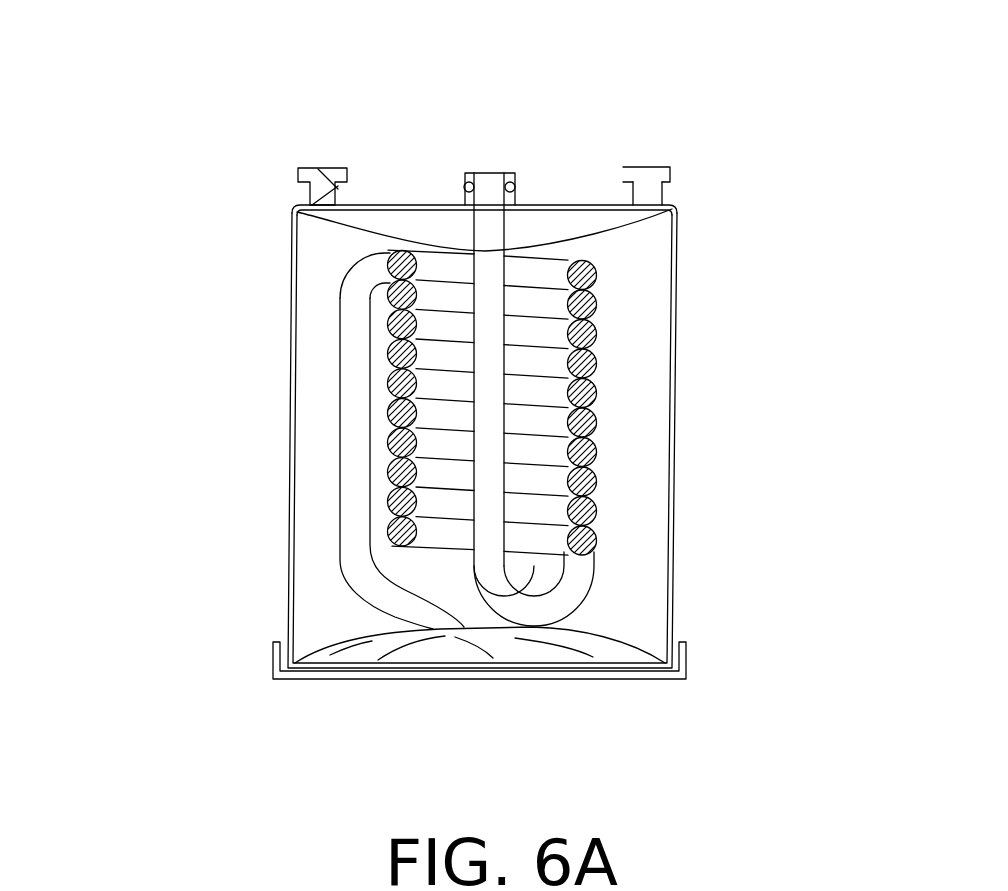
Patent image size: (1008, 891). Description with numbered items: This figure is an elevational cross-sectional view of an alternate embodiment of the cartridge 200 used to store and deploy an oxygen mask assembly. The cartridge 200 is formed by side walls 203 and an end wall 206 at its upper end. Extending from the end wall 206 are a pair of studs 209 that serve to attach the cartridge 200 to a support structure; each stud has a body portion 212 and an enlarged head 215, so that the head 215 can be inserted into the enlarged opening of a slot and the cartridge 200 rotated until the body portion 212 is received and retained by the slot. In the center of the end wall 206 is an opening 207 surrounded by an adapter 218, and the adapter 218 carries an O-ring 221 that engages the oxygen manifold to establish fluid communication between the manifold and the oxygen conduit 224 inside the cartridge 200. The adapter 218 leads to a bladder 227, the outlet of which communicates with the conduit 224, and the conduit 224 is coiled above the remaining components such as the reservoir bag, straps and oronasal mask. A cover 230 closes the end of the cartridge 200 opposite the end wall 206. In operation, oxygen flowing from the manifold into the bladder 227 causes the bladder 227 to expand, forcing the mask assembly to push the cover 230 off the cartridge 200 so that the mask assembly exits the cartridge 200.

The cartridge 200 is at (222, 313).
The side walls 203 is at (289, 407).
The end wall 206 is at (563, 205).
The opening 207 is at (485, 155).
The studs 209 is at (700, 156).
The body portion 212 is at (648, 195).
The enlarged head 215 is at (650, 167).
The adapter 218 is at (507, 173).
The O-ring 221 is at (464, 186).
The oxygen conduit 224 is at (555, 365).
The bladder 227 is at (383, 229).
The cover 230 is at (688, 652).